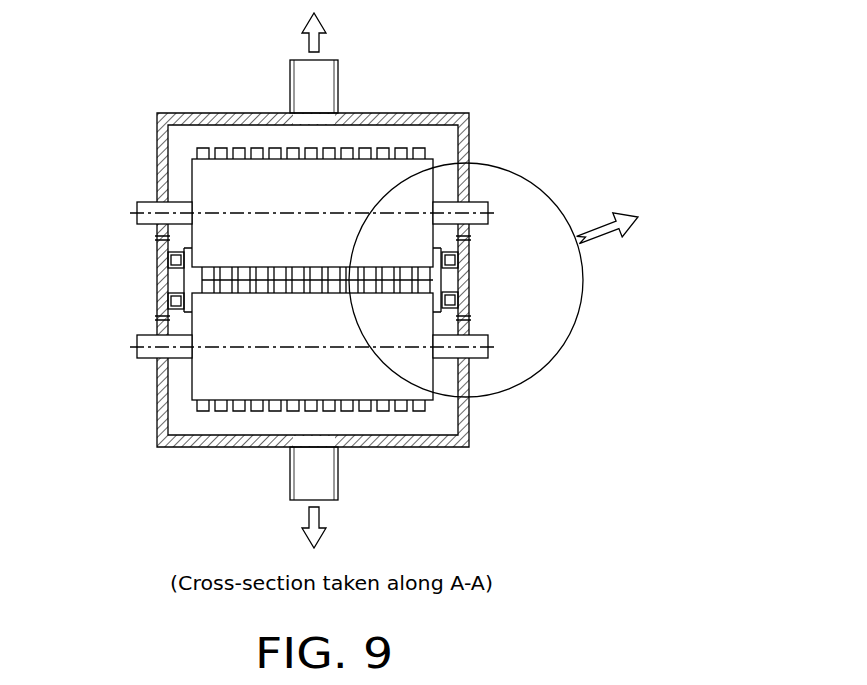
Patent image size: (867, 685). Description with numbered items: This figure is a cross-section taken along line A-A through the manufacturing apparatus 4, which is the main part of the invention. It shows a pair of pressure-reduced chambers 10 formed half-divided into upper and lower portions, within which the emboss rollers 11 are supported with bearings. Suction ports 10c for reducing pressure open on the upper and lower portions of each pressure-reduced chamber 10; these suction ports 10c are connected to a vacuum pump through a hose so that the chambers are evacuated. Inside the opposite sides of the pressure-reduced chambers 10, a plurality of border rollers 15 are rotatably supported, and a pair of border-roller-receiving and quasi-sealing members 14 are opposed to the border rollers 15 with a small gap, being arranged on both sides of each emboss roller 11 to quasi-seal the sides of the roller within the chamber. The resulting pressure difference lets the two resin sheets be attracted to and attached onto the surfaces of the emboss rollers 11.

The manufacturing apparatus 4 is at (571, 85).
The pressure-reduced chamber 10 is at (453, 112).
The suction port 10c is at (325, 75).
The emboss roller 11 is at (236, 183).
The border-roller-receiving and quasi-sealing member 14 is at (157, 238).
The border roller 15 is at (157, 258).